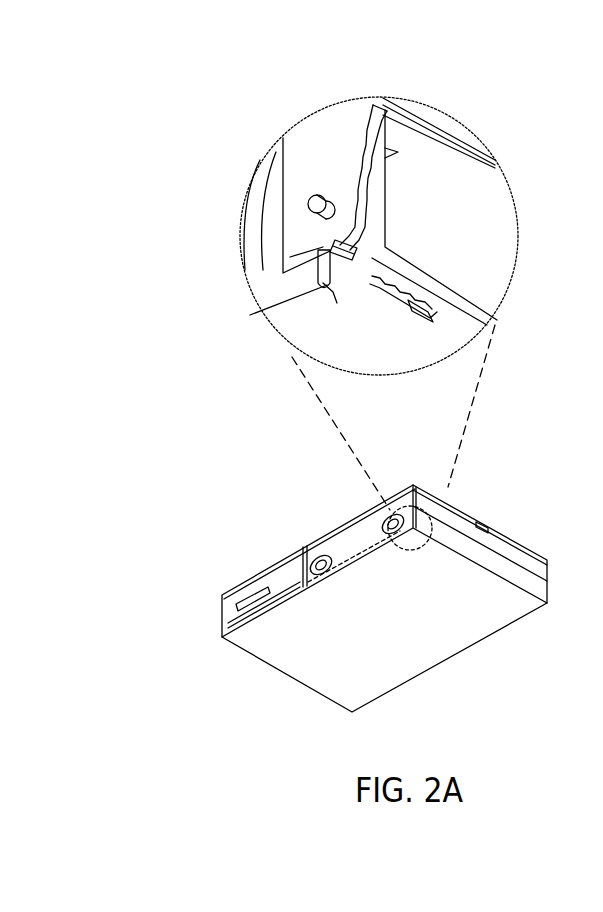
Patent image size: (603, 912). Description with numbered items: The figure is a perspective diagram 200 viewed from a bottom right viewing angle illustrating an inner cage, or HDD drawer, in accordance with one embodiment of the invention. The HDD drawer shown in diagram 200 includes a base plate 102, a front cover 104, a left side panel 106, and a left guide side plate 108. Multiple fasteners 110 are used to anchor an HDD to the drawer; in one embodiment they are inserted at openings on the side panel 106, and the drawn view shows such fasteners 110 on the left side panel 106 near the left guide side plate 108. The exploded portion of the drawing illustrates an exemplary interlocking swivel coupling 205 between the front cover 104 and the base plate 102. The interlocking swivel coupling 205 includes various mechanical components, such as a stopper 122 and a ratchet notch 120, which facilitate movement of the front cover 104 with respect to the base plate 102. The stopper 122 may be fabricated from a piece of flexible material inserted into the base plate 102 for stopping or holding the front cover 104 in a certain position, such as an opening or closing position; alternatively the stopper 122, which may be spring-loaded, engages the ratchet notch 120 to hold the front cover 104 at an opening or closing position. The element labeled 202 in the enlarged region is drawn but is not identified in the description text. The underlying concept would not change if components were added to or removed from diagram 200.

The perspective diagram 200 is at (370, 174).
The interlocking swivel coupling 205 is at (379, 320).
The base plate 102 is at (384, 523).
The front cover 104 is at (385, 373).
The left side panel 106 is at (319, 533).
The left guide side plate 108 is at (228, 573).
The fasteners 110 is at (311, 608).
The ratchet notch 120 is at (444, 177).
The stopper 122 is at (252, 316).
The connector 202 is at (476, 341).